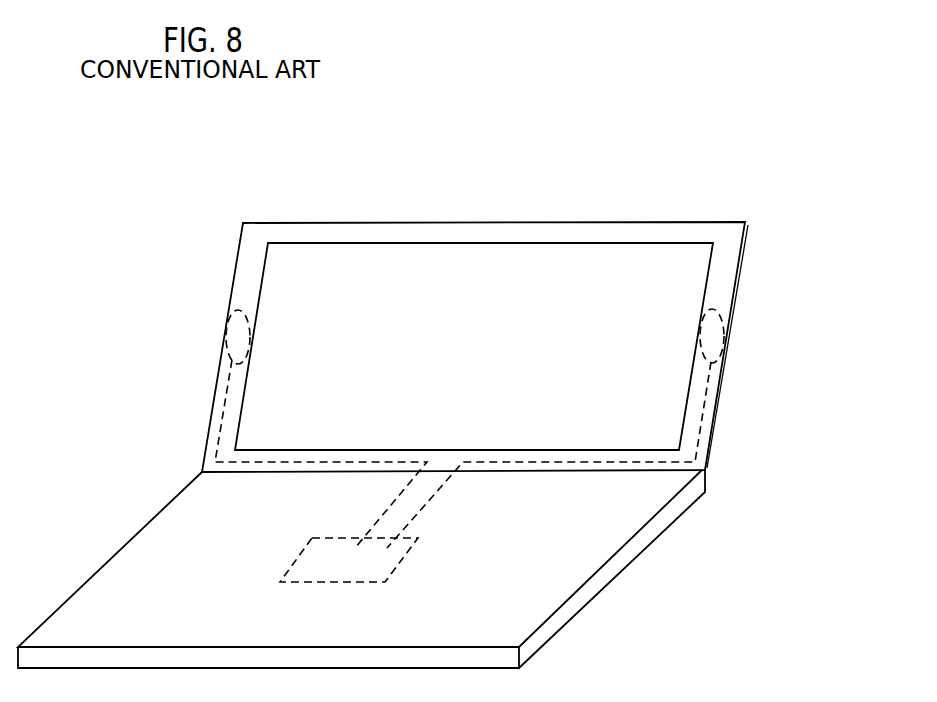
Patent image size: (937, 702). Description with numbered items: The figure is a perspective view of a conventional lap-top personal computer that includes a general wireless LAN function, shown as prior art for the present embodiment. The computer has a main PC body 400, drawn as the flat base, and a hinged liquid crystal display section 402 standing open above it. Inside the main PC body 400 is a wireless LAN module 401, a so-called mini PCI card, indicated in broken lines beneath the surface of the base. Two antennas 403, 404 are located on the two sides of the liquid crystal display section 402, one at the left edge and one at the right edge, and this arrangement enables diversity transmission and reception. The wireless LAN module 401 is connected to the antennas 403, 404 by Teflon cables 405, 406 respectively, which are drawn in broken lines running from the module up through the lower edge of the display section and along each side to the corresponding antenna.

The main PC body 400 is at (652, 572).
The wireless LAN module 401 is at (332, 560).
The liquid crystal display section 402 is at (440, 298).
The antenna 403 is at (233, 340).
The antenna 404 is at (717, 337).
The Teflon cable 405 is at (222, 415).
The Teflon cable 406 is at (705, 413).